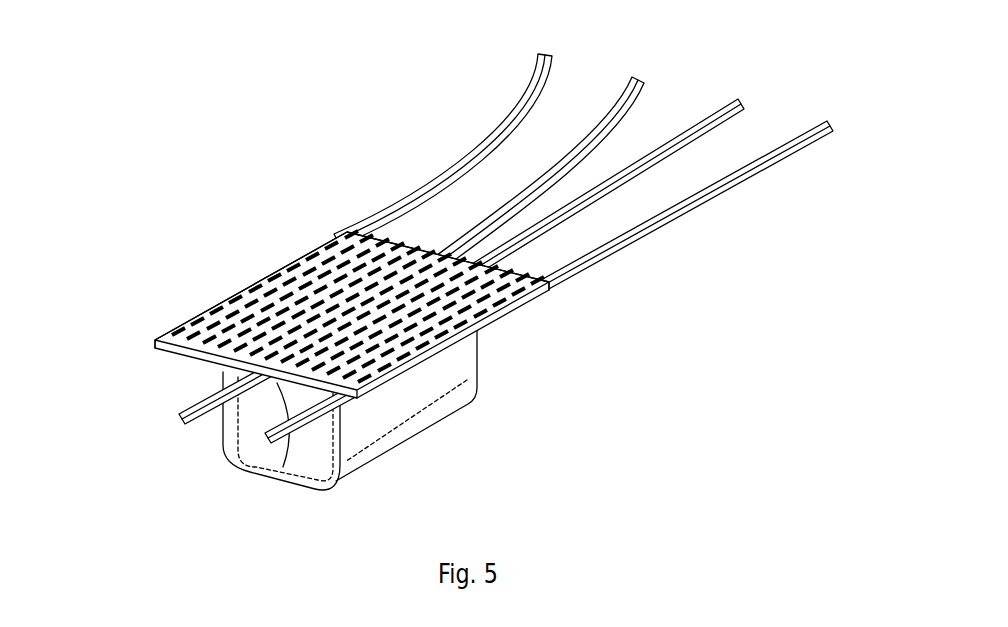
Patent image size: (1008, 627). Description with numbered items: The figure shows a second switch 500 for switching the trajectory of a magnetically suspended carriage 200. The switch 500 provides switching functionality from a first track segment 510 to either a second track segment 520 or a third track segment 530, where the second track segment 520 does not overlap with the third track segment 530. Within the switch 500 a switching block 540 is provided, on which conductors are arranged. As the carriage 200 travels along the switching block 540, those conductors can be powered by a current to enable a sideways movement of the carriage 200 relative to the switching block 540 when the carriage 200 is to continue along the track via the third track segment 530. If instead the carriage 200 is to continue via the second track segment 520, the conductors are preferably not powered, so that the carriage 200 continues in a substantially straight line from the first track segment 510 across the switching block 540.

The switch 500 is at (458, 255).
The switching block 540 is at (280, 272).
The third track segment 530 is at (577, 85).
The second track segment 520 is at (785, 102).
The first track segment 510 is at (167, 428).
The carriage 200 is at (418, 427).